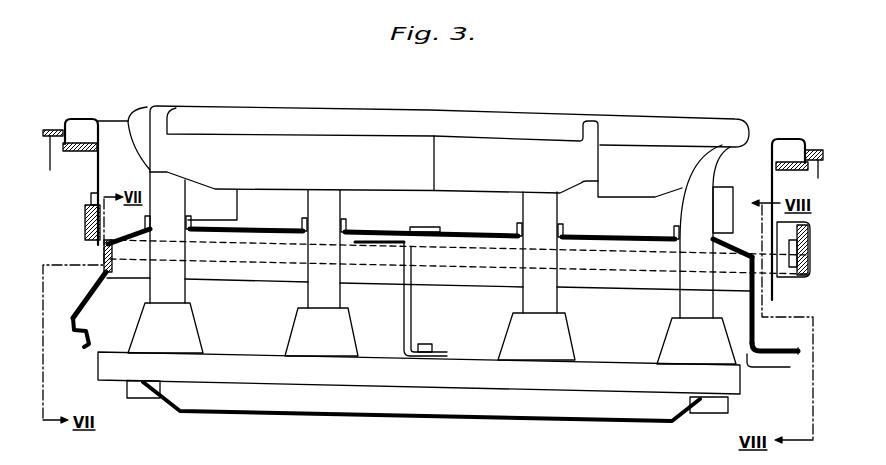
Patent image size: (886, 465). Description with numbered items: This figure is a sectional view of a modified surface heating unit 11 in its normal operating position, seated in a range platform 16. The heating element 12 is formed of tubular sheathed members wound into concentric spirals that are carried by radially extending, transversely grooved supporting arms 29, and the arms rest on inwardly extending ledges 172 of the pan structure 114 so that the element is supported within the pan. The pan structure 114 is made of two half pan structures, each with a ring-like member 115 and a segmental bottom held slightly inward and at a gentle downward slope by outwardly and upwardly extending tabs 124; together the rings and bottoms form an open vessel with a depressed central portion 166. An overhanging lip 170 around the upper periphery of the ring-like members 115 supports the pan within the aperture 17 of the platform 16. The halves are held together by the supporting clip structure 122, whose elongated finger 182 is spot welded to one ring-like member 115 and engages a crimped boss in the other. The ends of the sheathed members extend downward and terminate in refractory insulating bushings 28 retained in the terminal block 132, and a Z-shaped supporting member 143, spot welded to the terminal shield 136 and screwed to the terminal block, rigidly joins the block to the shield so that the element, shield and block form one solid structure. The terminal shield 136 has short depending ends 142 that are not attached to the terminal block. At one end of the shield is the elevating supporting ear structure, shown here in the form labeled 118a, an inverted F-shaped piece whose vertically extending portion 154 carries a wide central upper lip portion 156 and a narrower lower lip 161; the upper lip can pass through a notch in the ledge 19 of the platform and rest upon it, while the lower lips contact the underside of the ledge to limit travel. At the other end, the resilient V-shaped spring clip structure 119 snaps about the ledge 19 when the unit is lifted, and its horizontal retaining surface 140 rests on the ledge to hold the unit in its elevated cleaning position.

The surface heating unit 11 is at (408, 107).
The heating element 12 is at (280, 110).
The range platform 16 is at (431, 166).
The aperture 17 is at (53, 123).
The ledge 19 is at (84, 152).
The refractory insulating bushing 28 is at (300, 337).
The supporting arm 29 is at (393, 180).
The pan structure 114 is at (110, 127).
The ring-like member 115 is at (769, 203).
The bottom flange 118a is at (783, 342).
The spring clip structure 119 is at (91, 300).
The supporting clip structure 122 is at (86, 223).
The tab 124 is at (112, 227).
The terminal block 132 is at (340, 377).
The terminal shield 136 is at (242, 237).
The retaining surface 140 is at (87, 334).
The depending end 142 is at (103, 262).
The Z-shaped supporting member 143 is at (407, 303).
The vertically extending portion 154 is at (750, 309).
The upper lip portion 156 is at (794, 352).
The lower lip 161 is at (790, 369).
The depressed central portion 166 is at (757, 145).
The overhanging lip 170 is at (78, 130).
The ledge 172 is at (228, 213).
The finger 182 is at (91, 198).